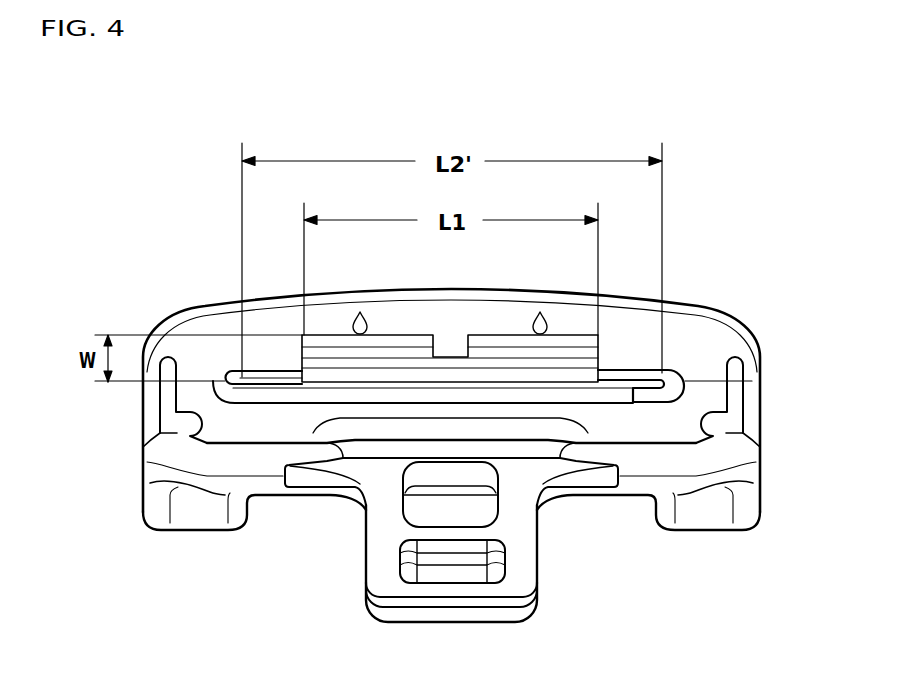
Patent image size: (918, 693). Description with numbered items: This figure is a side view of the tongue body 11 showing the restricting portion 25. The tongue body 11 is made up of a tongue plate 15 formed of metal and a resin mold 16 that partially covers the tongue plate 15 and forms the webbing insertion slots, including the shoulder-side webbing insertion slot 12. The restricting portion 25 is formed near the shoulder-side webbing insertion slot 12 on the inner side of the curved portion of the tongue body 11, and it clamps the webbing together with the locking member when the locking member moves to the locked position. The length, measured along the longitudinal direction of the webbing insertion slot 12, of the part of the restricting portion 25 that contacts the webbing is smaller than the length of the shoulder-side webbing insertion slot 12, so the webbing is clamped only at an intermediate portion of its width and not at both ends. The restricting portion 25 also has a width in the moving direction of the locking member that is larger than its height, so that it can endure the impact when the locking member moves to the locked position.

The tongue body 11 is at (770, 332).
The shoulder-side webbing insertion slot 12 is at (626, 378).
The tongue plate 15 is at (356, 548).
The resin mold 16 is at (205, 331).
The restricting portion 25 is at (403, 352).